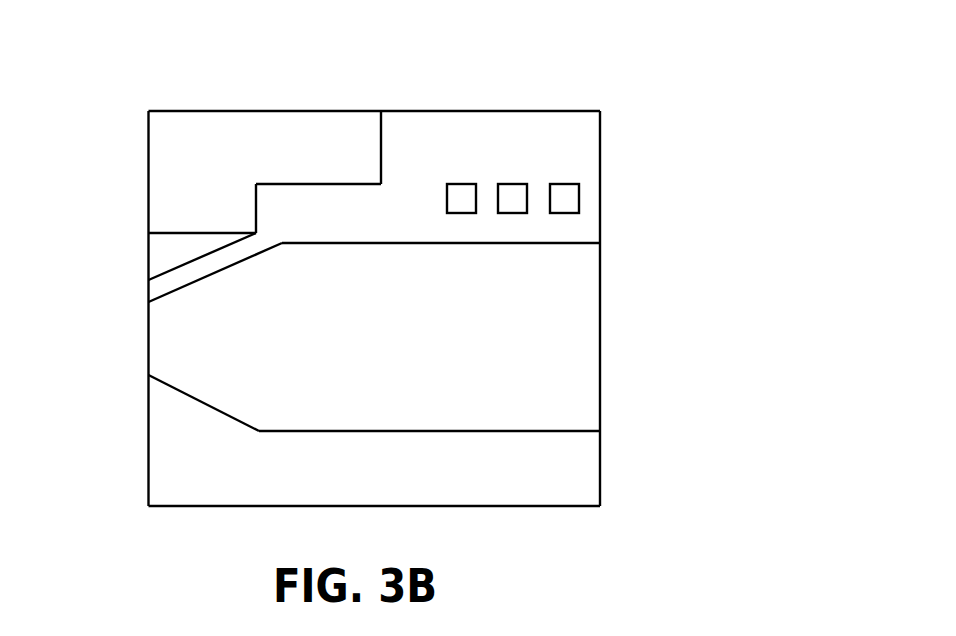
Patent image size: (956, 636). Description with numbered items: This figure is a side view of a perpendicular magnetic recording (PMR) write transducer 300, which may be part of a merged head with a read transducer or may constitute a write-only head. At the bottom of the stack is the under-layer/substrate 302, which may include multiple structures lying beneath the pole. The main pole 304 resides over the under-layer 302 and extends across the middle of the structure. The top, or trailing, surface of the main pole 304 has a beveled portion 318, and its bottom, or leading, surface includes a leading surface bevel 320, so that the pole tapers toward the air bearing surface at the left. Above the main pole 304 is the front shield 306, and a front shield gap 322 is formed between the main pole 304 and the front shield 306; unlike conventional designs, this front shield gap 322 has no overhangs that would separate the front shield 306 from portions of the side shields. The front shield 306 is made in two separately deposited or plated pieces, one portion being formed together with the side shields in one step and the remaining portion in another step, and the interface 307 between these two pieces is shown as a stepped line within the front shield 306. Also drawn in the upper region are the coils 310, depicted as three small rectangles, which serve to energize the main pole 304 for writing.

The perpendicular magnetic recording transducer 300 is at (99, 82).
The under-layer/substrate 302 is at (183, 479).
The main pole 304 is at (417, 348).
The front shield 306 is at (208, 130).
The interface 307 is at (215, 232).
The coils 310 is at (567, 200).
The beveled portion 318 is at (220, 270).
The leading surface bevel 320 is at (205, 403).
The front shield gap 322 is at (160, 288).